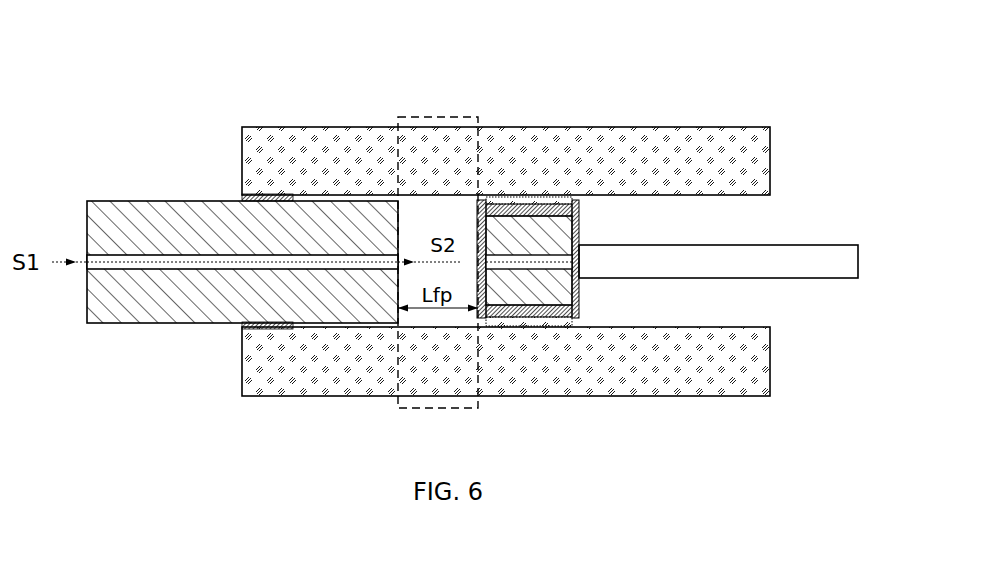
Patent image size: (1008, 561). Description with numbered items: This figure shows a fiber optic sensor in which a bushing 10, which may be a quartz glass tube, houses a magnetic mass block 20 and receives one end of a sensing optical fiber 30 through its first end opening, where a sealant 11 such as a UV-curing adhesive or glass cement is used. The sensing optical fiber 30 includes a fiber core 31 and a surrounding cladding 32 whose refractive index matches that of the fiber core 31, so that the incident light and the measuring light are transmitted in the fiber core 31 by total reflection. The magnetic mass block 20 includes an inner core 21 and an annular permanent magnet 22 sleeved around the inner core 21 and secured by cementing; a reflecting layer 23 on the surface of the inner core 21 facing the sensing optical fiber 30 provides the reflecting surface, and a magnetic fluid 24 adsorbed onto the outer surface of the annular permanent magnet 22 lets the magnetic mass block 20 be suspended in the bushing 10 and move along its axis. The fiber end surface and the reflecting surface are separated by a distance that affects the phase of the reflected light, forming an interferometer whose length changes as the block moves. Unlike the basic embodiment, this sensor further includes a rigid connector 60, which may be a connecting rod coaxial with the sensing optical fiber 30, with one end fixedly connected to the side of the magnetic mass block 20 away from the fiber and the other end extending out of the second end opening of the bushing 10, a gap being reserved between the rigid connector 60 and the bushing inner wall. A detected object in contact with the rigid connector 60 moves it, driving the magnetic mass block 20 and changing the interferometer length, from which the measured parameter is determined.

The bushing 10 is at (506, 229).
The sealant 11 is at (248, 195).
The magnetic mass block 20 is at (563, 170).
The inner core 21 is at (612, 183).
The annular permanent magnet 22 is at (533, 190).
The reflecting layer 23 is at (436, 190).
The magnetic fluid 24 is at (524, 194).
The sensing optical fiber 30 is at (220, 169).
The fiber core 31 is at (242, 165).
The cladding 32 is at (220, 192).
The rigid connector 60 is at (745, 170).